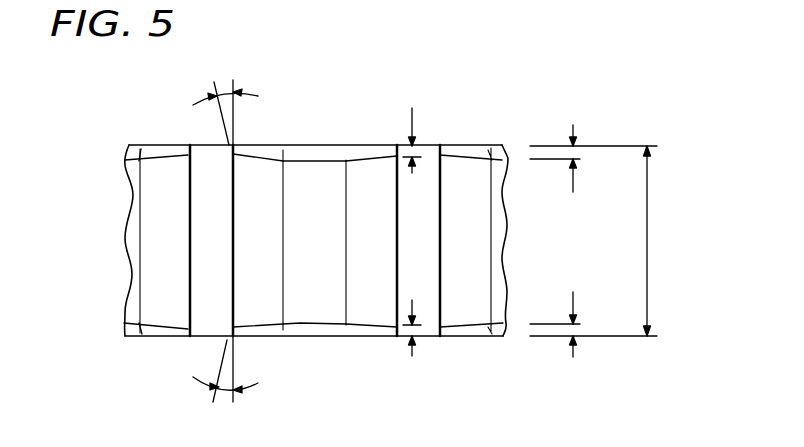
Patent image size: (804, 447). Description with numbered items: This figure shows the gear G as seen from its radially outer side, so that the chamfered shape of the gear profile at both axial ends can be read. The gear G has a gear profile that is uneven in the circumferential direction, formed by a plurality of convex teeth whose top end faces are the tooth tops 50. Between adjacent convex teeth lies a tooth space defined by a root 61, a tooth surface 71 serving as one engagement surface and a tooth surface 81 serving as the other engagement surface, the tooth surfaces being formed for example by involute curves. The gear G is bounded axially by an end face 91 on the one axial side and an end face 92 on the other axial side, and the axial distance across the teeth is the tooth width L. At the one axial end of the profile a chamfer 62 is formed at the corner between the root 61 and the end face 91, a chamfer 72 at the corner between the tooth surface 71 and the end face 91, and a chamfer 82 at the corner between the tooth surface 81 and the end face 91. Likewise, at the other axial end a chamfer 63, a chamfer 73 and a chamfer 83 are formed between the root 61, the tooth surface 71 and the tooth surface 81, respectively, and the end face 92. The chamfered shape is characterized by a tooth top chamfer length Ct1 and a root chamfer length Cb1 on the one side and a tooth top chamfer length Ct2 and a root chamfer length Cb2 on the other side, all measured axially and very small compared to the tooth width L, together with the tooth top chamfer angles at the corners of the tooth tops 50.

The gear G is at (523, 108).
The tooth top 50 is at (203, 153).
The root 61 is at (328, 190).
The chamfer 62 is at (317, 337).
The chamfer 63 is at (313, 153).
The tooth surface 71 is at (260, 213).
The chamfer 72 is at (252, 337).
The chamfer 73 is at (258, 150).
The tooth surface 81 is at (158, 238).
The chamfer 82 is at (370, 337).
The chamfer 83 is at (388, 148).
The end face 91 is at (168, 338).
The end face 92 is at (165, 145).
The tooth width L is at (657, 241).
The root chamfer length Cb1 is at (593, 324).
The root chamfer length Cb2 is at (593, 158).
The tooth top chamfer length Ct1 is at (431, 336).
The tooth top chamfer length Ct2 is at (430, 140).